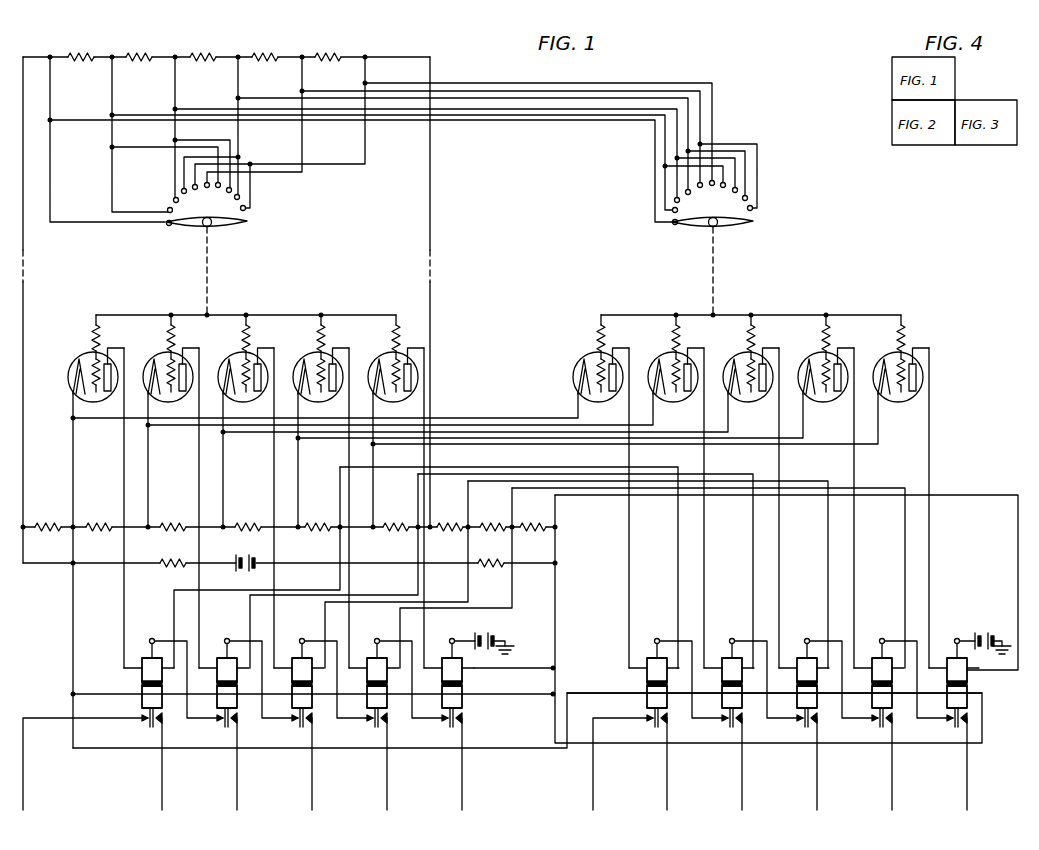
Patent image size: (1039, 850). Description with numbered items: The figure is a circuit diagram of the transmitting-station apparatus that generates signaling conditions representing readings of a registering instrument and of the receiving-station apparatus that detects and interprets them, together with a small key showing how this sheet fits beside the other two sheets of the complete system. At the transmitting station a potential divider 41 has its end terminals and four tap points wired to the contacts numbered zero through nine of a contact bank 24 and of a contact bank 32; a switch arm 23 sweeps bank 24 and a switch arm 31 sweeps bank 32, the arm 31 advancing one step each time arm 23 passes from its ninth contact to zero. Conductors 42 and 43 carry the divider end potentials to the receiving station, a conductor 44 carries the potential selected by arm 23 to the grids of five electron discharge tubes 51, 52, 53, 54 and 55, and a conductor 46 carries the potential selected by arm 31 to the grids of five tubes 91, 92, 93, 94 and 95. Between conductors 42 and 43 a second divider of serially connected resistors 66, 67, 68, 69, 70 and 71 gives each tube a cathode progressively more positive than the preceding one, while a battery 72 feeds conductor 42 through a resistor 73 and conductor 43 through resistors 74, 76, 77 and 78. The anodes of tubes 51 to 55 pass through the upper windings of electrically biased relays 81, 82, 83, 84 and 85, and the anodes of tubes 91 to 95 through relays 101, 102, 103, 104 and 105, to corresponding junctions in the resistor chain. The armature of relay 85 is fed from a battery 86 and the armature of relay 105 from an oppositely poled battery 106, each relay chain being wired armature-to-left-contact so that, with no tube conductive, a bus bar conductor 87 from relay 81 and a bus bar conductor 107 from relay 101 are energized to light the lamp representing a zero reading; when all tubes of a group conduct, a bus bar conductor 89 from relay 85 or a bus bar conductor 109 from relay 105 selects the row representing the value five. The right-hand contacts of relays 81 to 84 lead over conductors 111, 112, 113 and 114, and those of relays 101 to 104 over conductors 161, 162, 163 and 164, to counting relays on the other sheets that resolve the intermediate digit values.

The potential divider 41 is at (200, 54).
The conductor 42 is at (23, 238).
The conductor 43 is at (430, 246).
The conductor 44 is at (207, 247).
The conductor 46 is at (713, 247).
The switch arm 23 is at (226, 224).
The contact bank 24 is at (181, 193).
The switch arm 31 is at (695, 224).
The contact bank 32 is at (672, 208).
The electron discharge tube 51 is at (76, 357).
The electron discharge tube 52 is at (151, 357).
The electron discharge tube 53 is at (226, 357).
The electron discharge tube 54 is at (301, 357).
The electron discharge tube 55 is at (376, 357).
The electron discharge tube 91 is at (581, 357).
The electron discharge tube 92 is at (656, 357).
The electron discharge tube 93 is at (731, 357).
The electron discharge tube 94 is at (806, 357).
The electron discharge tube 95 is at (881, 357).
The resistor 66 is at (48, 523).
The resistor 67 is at (99, 523).
The resistor 68 is at (173, 523).
The resistor 69 is at (248, 523).
The resistor 70 is at (318, 523).
The resistor 71 is at (396, 523).
The battery 72 is at (248, 556).
The resistor 73 is at (173, 559).
The resistor 74 is at (486, 569).
The resistor 76 is at (533, 523).
The resistor 77 is at (493, 523).
The resistor 78 is at (450, 523).
The electrically biased relay 81 is at (142, 682).
The electrically biased relay 82 is at (217, 682).
The electrically biased relay 83 is at (292, 682).
The electrically biased relay 84 is at (367, 682).
The electrically biased relay 85 is at (442, 682).
The battery 86 is at (481, 638).
The bus bar conductor 87 is at (23, 782).
The bus bar conductor 89 is at (462, 782).
The electrically biased relay 101 is at (647, 682).
The electrically biased relay 102 is at (722, 682).
The electrically biased relay 103 is at (797, 682).
The electrically biased relay 104 is at (872, 684).
The electrically biased relay 105 is at (947, 684).
The battery 106 is at (983, 632).
The bus bar conductor 107 is at (593, 782).
The bus bar conductor 109 is at (967, 782).
The conductor 111 is at (162, 782).
The conductor 112 is at (237, 782).
The conductor 113 is at (312, 782).
The conductor 114 is at (387, 782).
The conductor 161 is at (667, 782).
The conductor 162 is at (742, 782).
The conductor 163 is at (817, 782).
The conductor 164 is at (892, 782).